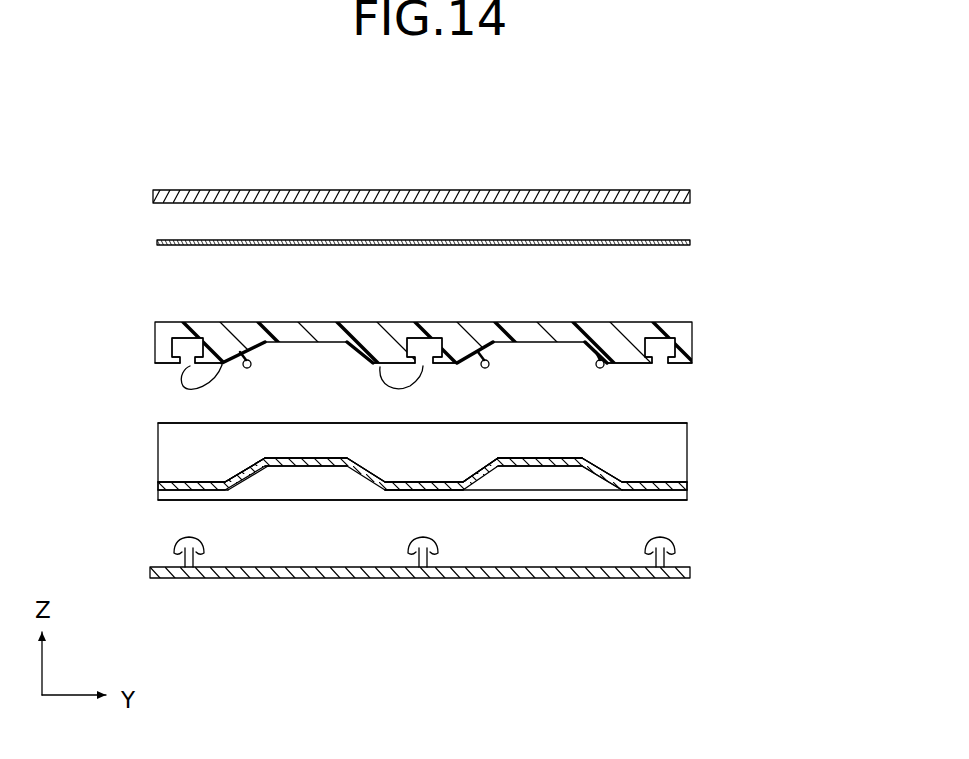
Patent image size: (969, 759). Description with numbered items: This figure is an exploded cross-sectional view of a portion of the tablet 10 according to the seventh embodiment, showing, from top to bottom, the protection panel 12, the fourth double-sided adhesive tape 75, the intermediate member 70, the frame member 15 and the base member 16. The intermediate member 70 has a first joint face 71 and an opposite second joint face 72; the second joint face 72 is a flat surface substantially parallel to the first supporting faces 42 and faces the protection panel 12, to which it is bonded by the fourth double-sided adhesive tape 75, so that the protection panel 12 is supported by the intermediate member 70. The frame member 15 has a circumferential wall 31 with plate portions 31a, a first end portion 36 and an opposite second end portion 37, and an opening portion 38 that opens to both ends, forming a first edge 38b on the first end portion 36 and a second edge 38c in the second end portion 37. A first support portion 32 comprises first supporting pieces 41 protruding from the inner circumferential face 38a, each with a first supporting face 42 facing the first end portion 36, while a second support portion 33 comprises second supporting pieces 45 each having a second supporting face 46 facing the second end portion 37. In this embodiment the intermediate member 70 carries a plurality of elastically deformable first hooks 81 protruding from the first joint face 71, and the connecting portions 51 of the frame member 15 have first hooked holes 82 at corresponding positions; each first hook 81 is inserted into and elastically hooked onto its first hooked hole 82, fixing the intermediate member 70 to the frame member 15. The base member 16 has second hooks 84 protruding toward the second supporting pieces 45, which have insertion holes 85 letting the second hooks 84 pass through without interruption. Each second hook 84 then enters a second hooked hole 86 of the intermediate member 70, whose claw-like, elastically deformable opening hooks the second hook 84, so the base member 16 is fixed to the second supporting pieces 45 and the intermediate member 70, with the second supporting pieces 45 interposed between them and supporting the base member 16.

The tablet 10 is at (188, 146).
The protection panel 12 is at (311, 189).
The fourth double-sided adhesive tape 75 is at (455, 239).
The intermediate member 70 is at (168, 345).
The second joint face 72 is at (196, 324).
The first joint face 71 is at (155, 388).
The first hooks 81 is at (262, 362).
The second hooked holes 86 is at (246, 358).
The circumferential wall 31 is at (173, 462).
The plate portions 31a is at (175, 452).
The insertion holes 85 is at (175, 487).
The opening portion 38 is at (552, 492).
The inner circumferential face 38a is at (640, 457).
The first edge 38b is at (472, 472).
The second edge 38c is at (318, 491).
The first end portion 36 is at (535, 422).
The first support portion 32 is at (580, 452).
The second support portion 33 is at (677, 497).
The first supporting pieces 41 is at (287, 457).
The first supporting faces 42 is at (328, 457).
The first hooked holes 82 is at (244, 474).
The second supporting pieces 45 is at (225, 489).
The second supporting faces 46 is at (236, 489).
The connecting portions 51 is at (248, 490).
The second end portion 37 is at (565, 491).
The frame member 15 is at (192, 500).
The second hooks 84 is at (177, 550).
The base member 16 is at (168, 579).